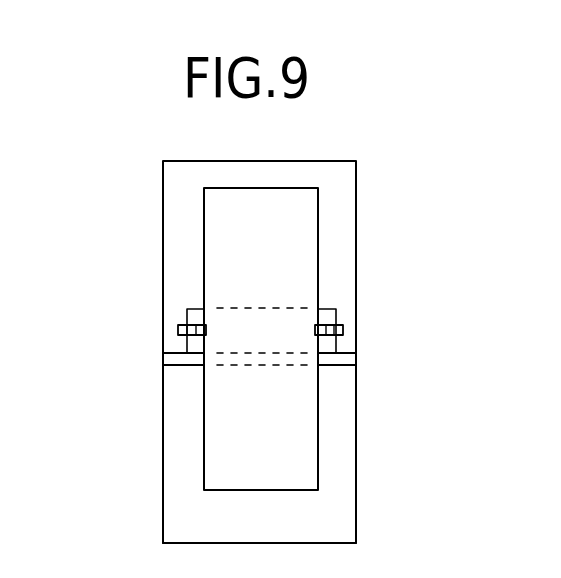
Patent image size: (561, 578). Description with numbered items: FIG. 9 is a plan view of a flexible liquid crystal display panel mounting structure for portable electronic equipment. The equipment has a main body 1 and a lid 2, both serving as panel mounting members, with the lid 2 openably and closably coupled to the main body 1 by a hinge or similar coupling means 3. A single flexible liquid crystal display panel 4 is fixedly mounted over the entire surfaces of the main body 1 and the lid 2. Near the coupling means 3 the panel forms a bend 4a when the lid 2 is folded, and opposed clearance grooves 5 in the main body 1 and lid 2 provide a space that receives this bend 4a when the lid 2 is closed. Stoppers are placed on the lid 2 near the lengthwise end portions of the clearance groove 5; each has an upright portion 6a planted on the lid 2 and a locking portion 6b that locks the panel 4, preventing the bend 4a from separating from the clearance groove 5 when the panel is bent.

The main body 1 is at (173, 493).
The lid 2 is at (175, 222).
The coupling means 3 is at (355, 357).
The flexible liquid crystal display panel 4 is at (313, 433).
The bend 4a is at (262, 358).
The clearance groove 5 is at (197, 351).
The upright portion 6a is at (178, 330).
The locking portion 6b is at (315, 328).